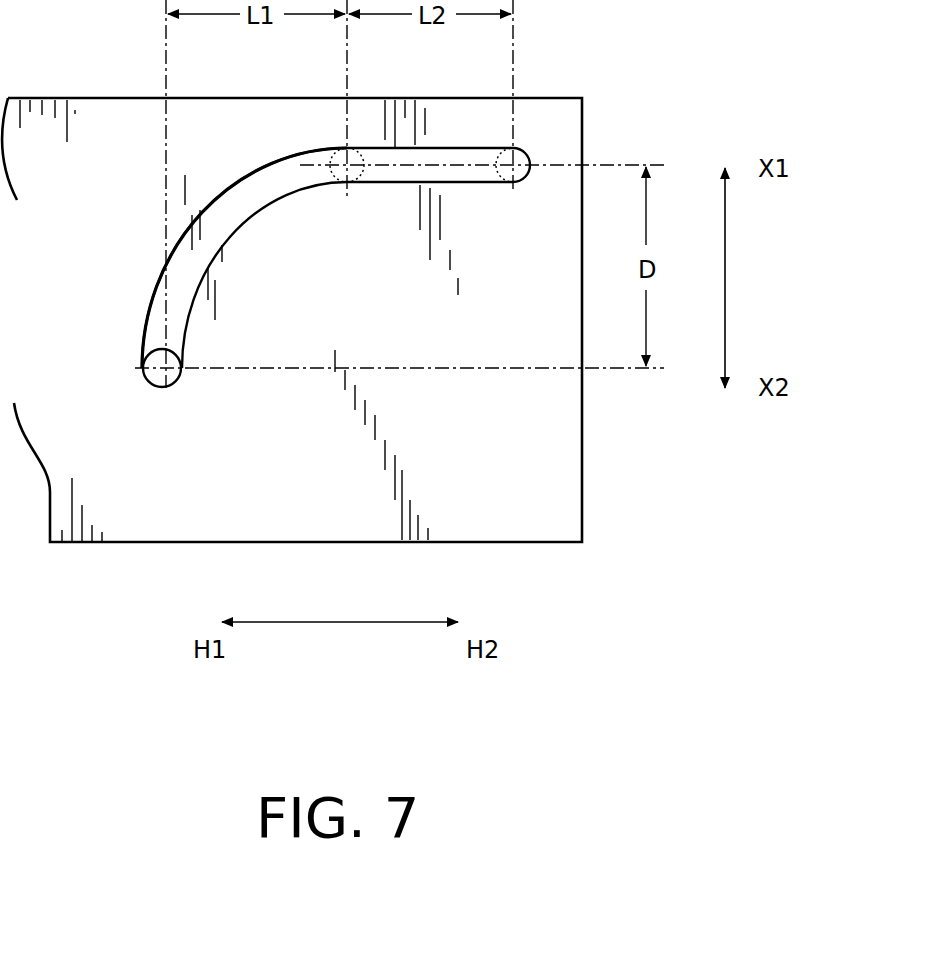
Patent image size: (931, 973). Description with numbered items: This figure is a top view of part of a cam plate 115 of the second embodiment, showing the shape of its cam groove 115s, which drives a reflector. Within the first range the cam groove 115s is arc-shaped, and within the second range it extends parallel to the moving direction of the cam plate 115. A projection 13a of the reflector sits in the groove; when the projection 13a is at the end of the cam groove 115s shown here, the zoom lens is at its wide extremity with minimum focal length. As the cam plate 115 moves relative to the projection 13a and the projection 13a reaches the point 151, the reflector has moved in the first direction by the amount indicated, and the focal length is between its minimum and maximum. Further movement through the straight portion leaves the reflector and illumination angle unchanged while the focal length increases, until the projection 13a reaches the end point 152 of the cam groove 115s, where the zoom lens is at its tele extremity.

The cam plate 115 is at (552, 495).
The cam groove 115s is at (212, 244).
The projection 13a is at (172, 382).
The point 151 is at (349, 172).
The end point 152 is at (515, 172).